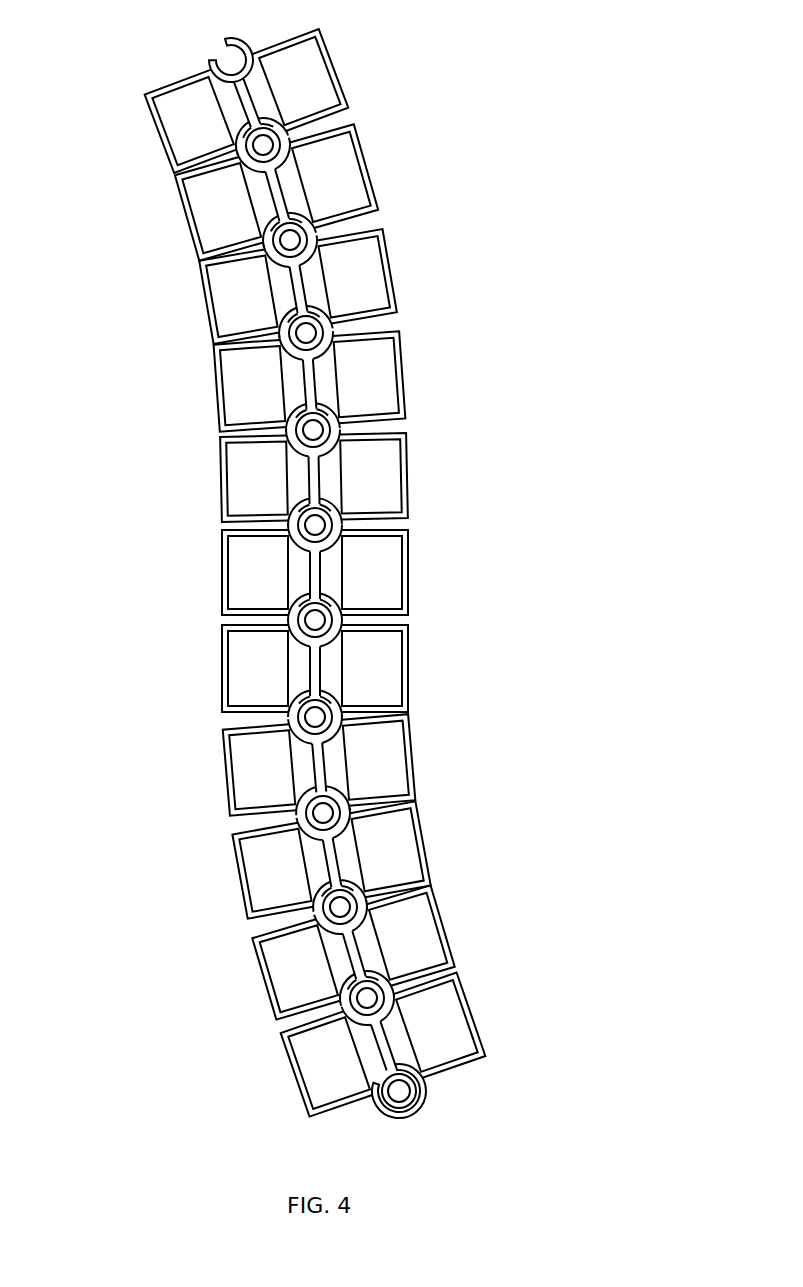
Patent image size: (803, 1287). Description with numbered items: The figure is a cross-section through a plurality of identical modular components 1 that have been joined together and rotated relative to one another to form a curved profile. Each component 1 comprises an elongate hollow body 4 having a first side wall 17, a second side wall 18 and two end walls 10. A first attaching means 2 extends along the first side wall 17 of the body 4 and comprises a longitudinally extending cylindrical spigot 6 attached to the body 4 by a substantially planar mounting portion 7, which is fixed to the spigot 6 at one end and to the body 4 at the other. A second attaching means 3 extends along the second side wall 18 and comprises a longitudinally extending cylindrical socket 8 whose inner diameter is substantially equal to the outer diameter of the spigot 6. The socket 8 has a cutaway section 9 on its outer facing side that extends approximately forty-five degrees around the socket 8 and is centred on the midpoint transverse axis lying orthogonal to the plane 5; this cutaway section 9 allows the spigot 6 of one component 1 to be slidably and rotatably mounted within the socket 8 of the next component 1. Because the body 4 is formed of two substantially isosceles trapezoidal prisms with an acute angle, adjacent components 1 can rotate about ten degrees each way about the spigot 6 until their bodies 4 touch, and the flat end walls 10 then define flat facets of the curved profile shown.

The modular component 1 is at (360, 588).
The first attaching means 2 is at (315, 230).
The second attaching means 3 is at (280, 331).
The elongate hollow body 4 is at (230, 869).
The plane 5 is at (325, 410).
The cylindrical spigot 6 is at (290, 425).
The mounting portion 7 is at (225, 563).
The cylindrical socket 8 is at (337, 590).
The cutaway section 9 is at (313, 256).
The end walls 10 is at (185, 218).
The first side wall 17 is at (335, 119).
The second side wall 18 is at (330, 234).